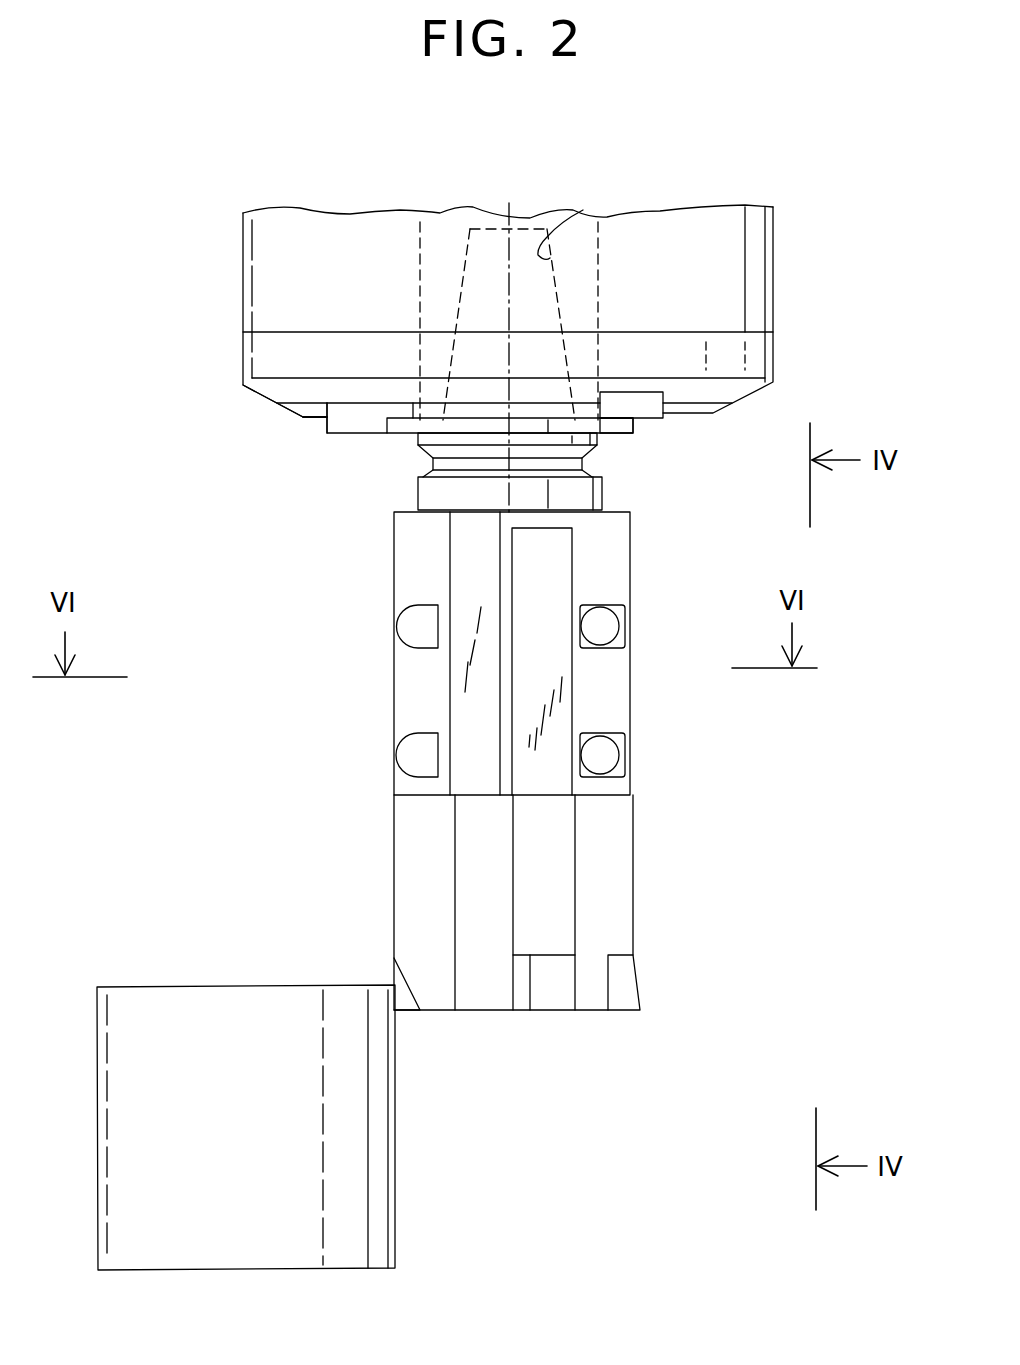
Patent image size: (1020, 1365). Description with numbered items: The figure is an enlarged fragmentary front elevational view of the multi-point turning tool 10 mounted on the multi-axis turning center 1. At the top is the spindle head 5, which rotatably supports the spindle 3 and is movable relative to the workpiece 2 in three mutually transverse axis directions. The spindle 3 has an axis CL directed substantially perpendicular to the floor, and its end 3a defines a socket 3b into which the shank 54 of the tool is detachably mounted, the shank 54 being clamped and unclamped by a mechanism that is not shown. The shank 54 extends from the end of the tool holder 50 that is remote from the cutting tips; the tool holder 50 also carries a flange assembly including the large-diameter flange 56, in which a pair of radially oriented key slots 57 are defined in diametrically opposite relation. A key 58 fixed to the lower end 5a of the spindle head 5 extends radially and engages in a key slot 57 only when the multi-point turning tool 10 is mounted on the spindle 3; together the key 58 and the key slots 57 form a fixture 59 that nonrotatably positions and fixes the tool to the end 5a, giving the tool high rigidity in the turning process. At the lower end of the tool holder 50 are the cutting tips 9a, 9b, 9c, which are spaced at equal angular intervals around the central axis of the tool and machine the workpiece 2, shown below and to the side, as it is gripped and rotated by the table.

The multi-axis turning center 1 is at (802, 150).
The workpiece 2 is at (395, 1210).
The spindle 3 is at (600, 240).
The end of the spindle 3a is at (548, 420).
The socket 3b is at (583, 210).
The spindle head 5 is at (773, 290).
The lower end of the spindle head 5a is at (312, 417).
The tip 9a is at (405, 1000).
The tip 9b is at (513, 985).
The tip 9c is at (640, 990).
The multi-point turning tool 10 is at (650, 815).
The tool holder 50 is at (633, 697).
The shank 54 is at (558, 303).
The large-diameter flange 56 is at (620, 435).
The key slot 57 is at (400, 425).
The key 58 is at (347, 434).
The fixture 59 is at (315, 450).